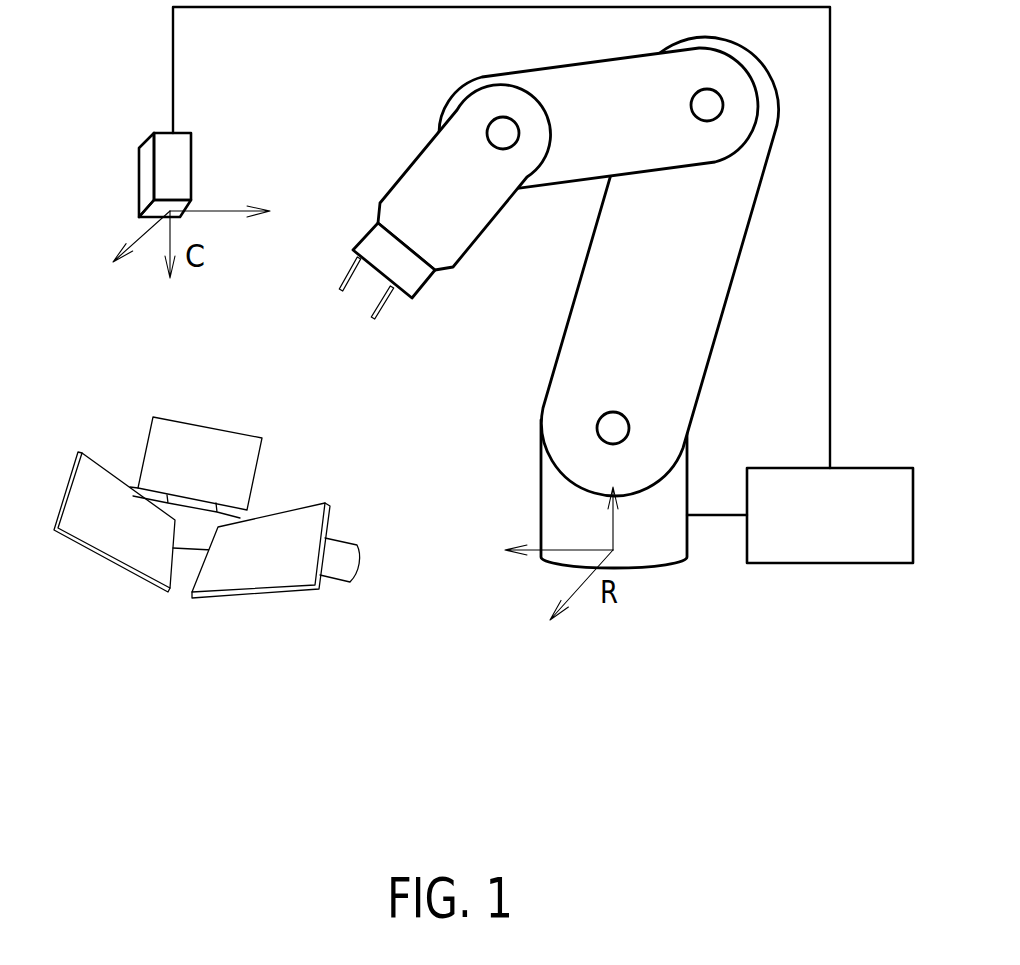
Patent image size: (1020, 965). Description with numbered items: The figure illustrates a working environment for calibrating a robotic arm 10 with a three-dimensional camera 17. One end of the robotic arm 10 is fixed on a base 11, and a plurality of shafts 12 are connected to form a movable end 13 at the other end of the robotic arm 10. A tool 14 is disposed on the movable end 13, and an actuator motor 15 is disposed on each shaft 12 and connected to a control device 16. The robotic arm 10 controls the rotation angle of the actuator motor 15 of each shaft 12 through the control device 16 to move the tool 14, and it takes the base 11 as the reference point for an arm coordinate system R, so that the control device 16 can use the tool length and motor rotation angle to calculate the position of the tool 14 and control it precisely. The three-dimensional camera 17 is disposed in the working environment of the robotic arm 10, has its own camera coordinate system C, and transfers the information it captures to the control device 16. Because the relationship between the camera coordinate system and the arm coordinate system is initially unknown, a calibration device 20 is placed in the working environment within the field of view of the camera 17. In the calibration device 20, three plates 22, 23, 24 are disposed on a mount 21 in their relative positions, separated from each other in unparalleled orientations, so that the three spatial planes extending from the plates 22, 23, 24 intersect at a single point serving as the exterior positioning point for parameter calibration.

The robotic arm 10 is at (556, 300).
The base 11 is at (541, 498).
The shaft 12 is at (573, 303).
The movable end 13 is at (373, 242).
The tool 14 is at (388, 313).
The actuator motor 15 is at (503, 116).
The control device 16 is at (863, 468).
The 3D camera 17 is at (139, 175).
The calibration device 20 is at (206, 466).
The mount 21 is at (337, 537).
The plate 22 is at (295, 518).
The plate 23 is at (70, 482).
The plate 24 is at (208, 427).